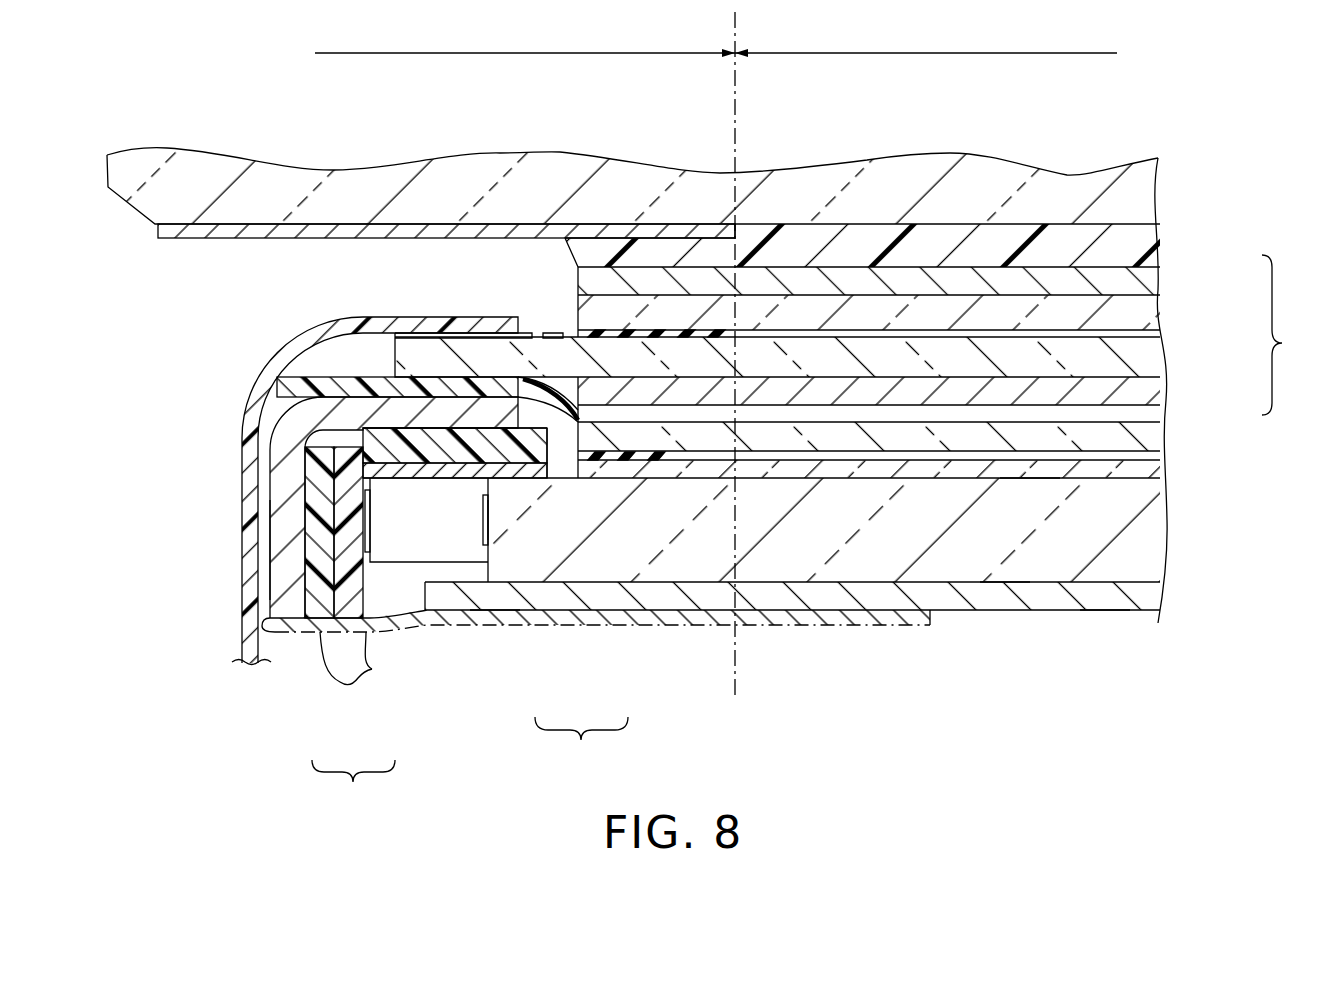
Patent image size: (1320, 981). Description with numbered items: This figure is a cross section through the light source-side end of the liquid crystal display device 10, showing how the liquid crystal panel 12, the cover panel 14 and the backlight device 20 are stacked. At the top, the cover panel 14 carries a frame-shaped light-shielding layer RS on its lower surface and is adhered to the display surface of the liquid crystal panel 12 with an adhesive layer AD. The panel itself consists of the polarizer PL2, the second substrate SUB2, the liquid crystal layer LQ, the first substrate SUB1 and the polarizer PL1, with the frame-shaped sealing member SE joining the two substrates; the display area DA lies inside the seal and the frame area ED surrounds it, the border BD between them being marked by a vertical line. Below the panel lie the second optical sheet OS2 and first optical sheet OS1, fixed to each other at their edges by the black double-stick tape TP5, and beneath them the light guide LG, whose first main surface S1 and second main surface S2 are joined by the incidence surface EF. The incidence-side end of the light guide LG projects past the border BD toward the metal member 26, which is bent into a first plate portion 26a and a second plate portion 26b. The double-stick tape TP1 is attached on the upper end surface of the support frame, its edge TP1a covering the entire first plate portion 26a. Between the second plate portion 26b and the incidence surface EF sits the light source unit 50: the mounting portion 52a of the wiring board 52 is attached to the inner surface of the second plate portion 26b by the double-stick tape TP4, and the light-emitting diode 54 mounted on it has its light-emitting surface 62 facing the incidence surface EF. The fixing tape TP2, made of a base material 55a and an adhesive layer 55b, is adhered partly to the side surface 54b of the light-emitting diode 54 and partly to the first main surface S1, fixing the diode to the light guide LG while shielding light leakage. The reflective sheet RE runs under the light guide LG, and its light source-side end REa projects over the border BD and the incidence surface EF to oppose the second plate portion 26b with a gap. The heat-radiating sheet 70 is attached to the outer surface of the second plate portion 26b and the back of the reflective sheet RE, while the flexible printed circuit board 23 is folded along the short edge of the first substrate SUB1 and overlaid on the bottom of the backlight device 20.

The cover panel 14 is at (1161, 191).
The light-shielding layer RS is at (205, 234).
The adhesive layer AD is at (1161, 241).
The polarizer PL2 is at (1161, 283).
The second substrate SUB2 is at (1161, 314).
The sealing member SE is at (641, 333).
The liquid crystal layer LQ is at (1161, 345).
The first substrate SUB1 is at (1161, 373).
The polarizer PL1 is at (1161, 405).
The second optical sheet OS2 is at (1161, 440).
The double-stick tape TP5 is at (628, 458).
The first optical sheet OS1 is at (1161, 472).
The light guide LG is at (1161, 533).
The heat-radiating sheet 70 is at (792, 614).
The light source-side end REa is at (495, 602).
The flexible printed circuit board 23 is at (242, 421).
The metal member 26 is at (282, 480).
The first plate portion 26a is at (357, 405).
The second plate portion 26b is at (278, 518).
The double-stick tape TP1 is at (463, 383).
The edge of double-stick tape TP1a is at (515, 347).
The liquid crystal panel 12 is at (853, 335).
The side surface 54b is at (407, 427).
The base material 55a is at (548, 447).
The adhesive layer 55b is at (530, 466).
The fixing tape TP2 is at (581, 595).
The double-stick tape TP4 is at (310, 537).
The mounting portion 52a is at (342, 582).
The wiring board 52 is at (323, 630).
The light-emitting surface 62 is at (527, 474).
The light-emitting diode 54 is at (393, 557).
The incidence surface EF is at (505, 517).
The light source unit 50 is at (353, 784).
The liquid crystal display device 10 is at (1208, 611).
The backlight device 20 is at (961, 638).
The first main surface S1 is at (1018, 482).
The second main surface S2 is at (1000, 584).
The reflective sheet RE is at (1105, 599).
The border BD is at (738, 28).
The frame area ED is at (525, 40).
The display area DA is at (926, 40).